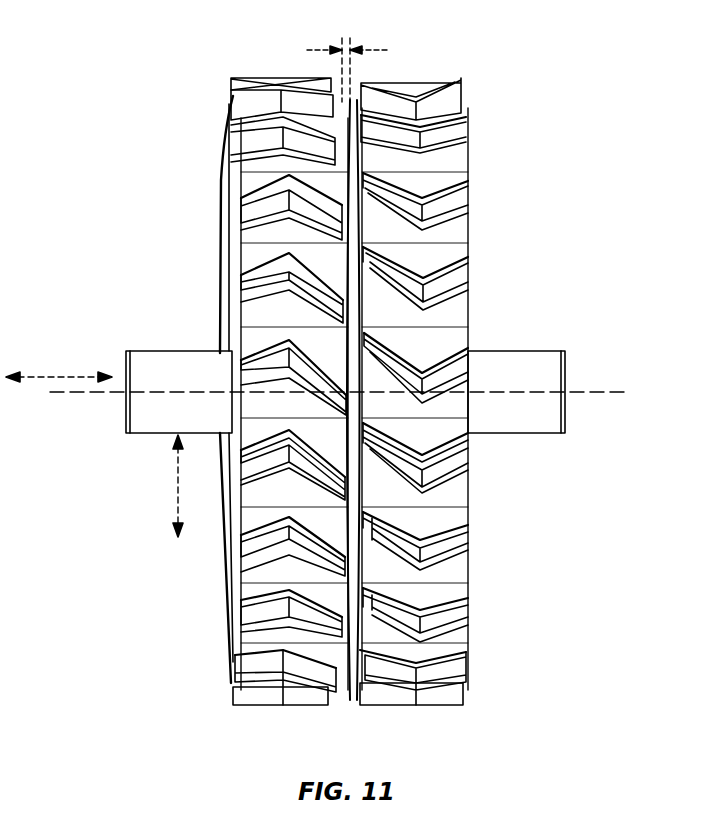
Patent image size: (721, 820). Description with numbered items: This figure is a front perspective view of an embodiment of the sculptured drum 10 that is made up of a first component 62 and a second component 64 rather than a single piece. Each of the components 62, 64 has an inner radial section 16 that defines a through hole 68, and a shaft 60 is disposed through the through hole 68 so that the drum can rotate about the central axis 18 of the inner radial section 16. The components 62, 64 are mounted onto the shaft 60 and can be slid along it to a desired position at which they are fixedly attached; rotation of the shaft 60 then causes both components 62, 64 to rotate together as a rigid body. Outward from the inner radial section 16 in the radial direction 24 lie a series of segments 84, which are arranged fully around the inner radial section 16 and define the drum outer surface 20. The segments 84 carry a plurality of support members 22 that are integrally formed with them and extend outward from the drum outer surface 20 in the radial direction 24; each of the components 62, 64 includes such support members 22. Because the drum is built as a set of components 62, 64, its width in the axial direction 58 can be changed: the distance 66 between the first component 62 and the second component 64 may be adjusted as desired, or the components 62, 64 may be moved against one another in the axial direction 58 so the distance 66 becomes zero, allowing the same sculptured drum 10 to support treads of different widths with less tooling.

The sculptured drum 10 is at (554, 66).
The inner radial section 16 is at (255, 422).
The central axis 18 is at (600, 392).
The drum outer surface 20 is at (447, 423).
The support members 22 is at (474, 292).
The radial direction 24 is at (176, 490).
The axial direction 58 is at (43, 372).
The shaft 60 is at (512, 360).
The first component 62 is at (260, 693).
The second component 64 is at (445, 693).
The distance 66 is at (378, 51).
The through hole 68 is at (230, 372).
The segments 84 is at (232, 177).